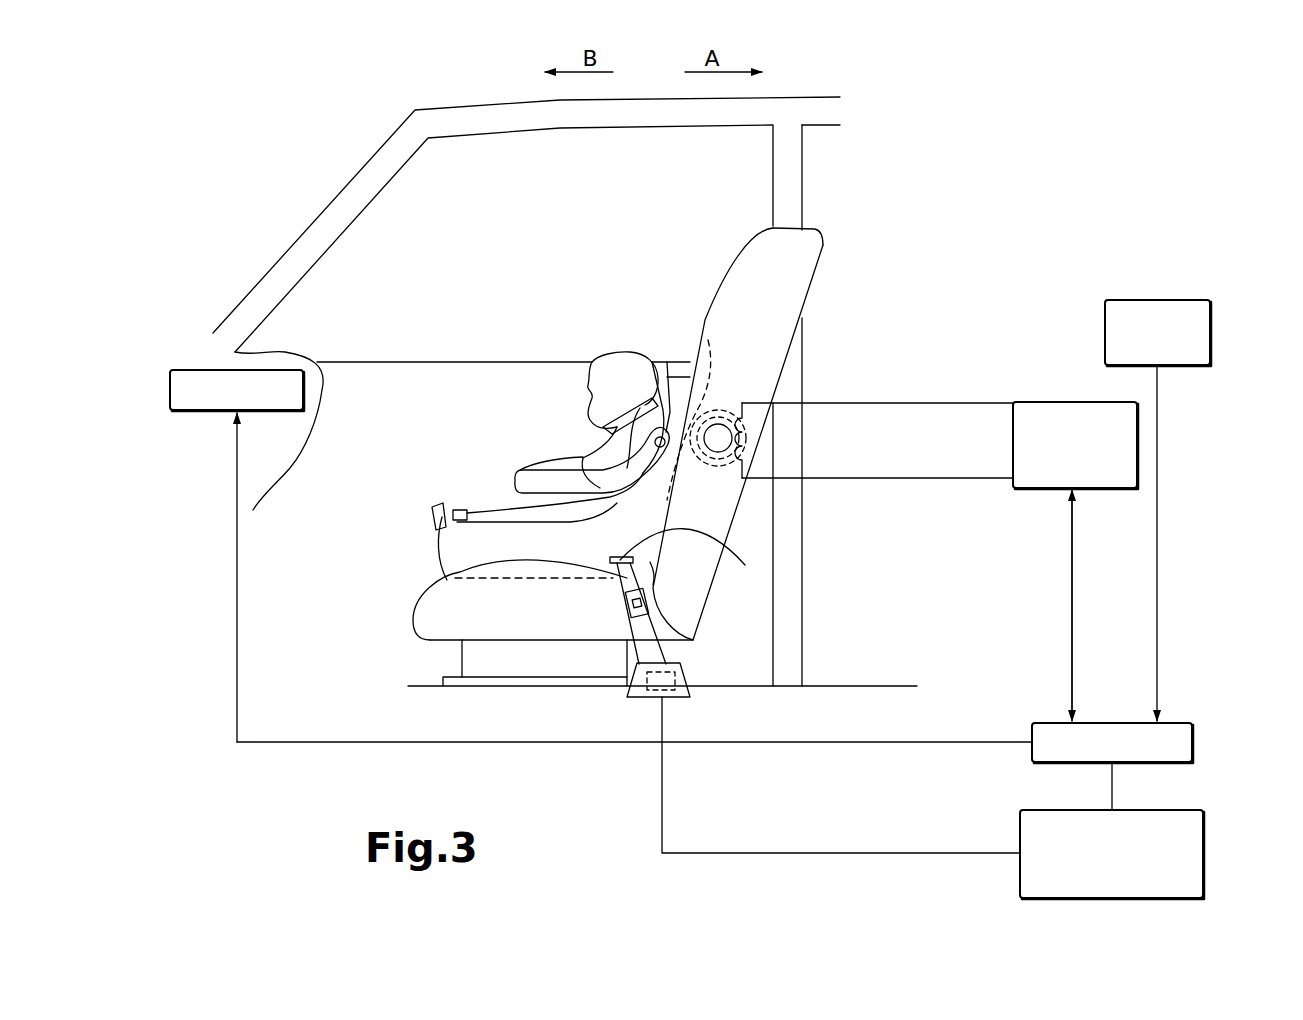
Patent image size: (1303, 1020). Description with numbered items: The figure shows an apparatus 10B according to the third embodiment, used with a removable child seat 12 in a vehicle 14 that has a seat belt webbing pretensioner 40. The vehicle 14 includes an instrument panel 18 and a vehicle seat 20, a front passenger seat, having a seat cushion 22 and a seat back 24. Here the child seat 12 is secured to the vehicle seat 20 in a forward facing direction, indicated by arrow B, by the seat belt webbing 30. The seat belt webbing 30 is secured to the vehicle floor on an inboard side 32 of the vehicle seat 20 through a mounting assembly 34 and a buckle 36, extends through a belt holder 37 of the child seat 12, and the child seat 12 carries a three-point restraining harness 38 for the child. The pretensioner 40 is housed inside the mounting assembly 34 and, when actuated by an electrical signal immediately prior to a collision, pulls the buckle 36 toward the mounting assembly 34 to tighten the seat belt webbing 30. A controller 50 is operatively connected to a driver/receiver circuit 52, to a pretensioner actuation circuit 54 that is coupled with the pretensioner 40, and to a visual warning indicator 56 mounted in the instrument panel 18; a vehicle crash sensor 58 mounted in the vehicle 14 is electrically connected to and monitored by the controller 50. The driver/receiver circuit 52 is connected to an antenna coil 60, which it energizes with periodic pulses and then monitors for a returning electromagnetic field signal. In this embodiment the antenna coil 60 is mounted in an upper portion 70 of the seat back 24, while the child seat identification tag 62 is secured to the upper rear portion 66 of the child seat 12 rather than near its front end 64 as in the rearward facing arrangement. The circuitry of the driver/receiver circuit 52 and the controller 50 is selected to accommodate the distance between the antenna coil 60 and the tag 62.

The apparatus 10B is at (735, 390).
The child seat 12 is at (438, 548).
The vehicle 14 is at (858, 218).
The instrument panel 18 is at (275, 352).
The vehicle seat 20 is at (812, 290).
The seat cushion 22 is at (427, 623).
The seat back 24 is at (745, 288).
The seat belt webbing 30 is at (655, 652).
The inboard side 32 is at (508, 630).
The mounting assembly 34 is at (682, 697).
The buckle 36 is at (627, 613).
The belt holder 37 is at (689, 561).
The three-point restraining harness 38 is at (636, 398).
The seat belt webbing pretensioner 40 is at (653, 685).
The controller 50 is at (1190, 728).
The driver/receiver circuit 52 is at (1020, 400).
The pretensioner actuation circuit 54 is at (1193, 867).
The visual warning indicator 56 is at (175, 373).
The vehicle crash sensor 58 is at (1205, 310).
The antenna coil 60 is at (740, 447).
The child seat identification tag 62 is at (708, 340).
The front end 64 is at (470, 530).
The upper rear portion 66 is at (667, 390).
The upper portion 70 is at (767, 385).